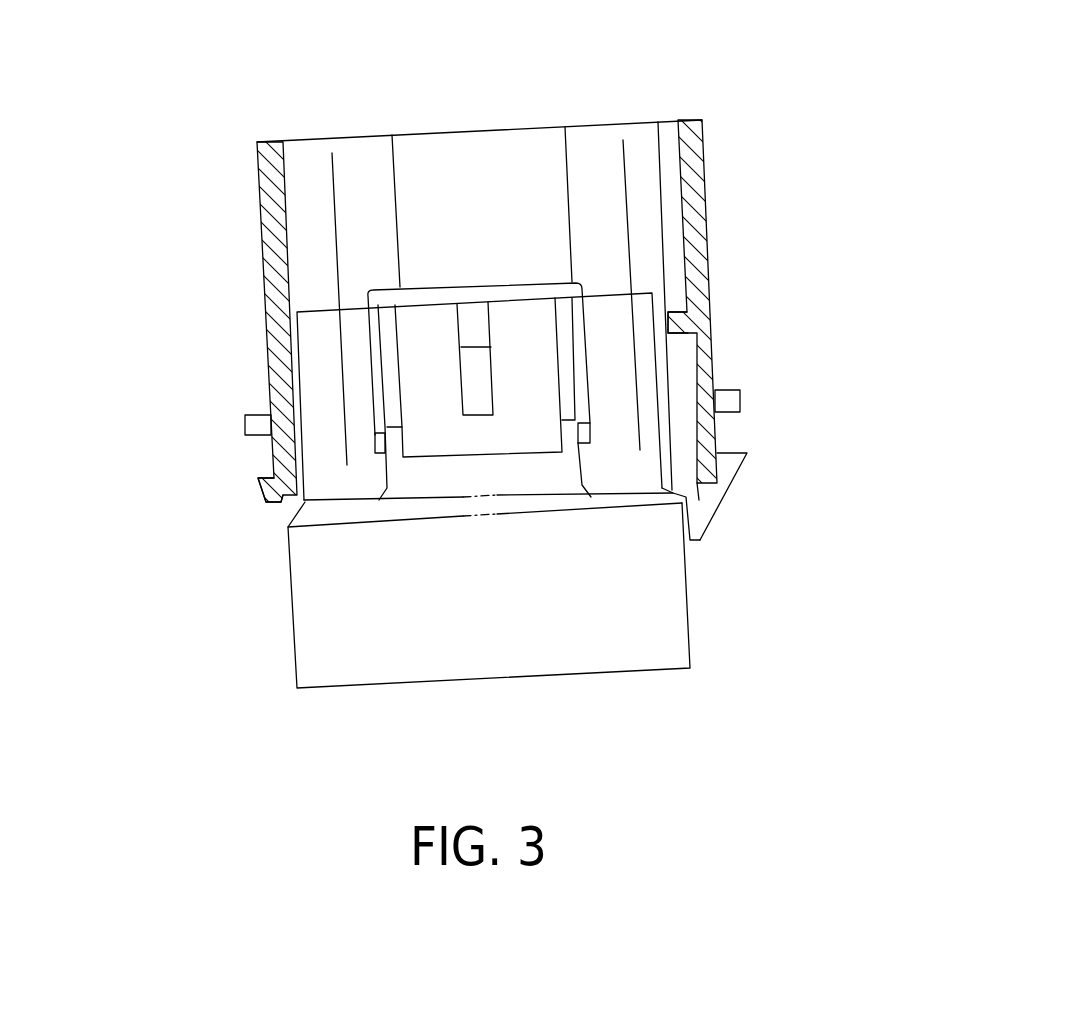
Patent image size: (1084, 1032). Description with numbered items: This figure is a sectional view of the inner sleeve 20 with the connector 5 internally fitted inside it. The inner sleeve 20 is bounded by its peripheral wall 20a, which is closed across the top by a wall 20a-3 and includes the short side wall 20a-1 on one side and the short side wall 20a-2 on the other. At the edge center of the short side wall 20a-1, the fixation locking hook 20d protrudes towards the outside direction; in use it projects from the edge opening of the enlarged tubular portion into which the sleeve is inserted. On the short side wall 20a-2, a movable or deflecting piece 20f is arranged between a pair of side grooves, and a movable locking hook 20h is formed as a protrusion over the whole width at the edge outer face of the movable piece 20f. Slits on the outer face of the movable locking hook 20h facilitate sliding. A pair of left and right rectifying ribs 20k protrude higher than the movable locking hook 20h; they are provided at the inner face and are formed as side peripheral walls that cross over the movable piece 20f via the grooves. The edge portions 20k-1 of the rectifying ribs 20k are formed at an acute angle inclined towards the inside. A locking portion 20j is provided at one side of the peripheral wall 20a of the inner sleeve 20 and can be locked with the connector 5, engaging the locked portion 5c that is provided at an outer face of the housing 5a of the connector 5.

The inner sleeve 20 is at (542, 375).
The peripheral wall 20a is at (702, 145).
The short side wall 20a-1 is at (258, 222).
The short side wall 20a-2 is at (707, 258).
The top wall 20a-3 is at (470, 173).
The fixation locking hook 20d is at (262, 485).
The movable piece 20f is at (702, 353).
The movable locking hook 20h is at (722, 470).
The locking portion 20j is at (427, 410).
The rectifying rib 20k is at (684, 522).
The edge portion 20k-1 is at (697, 527).
The connector 5 is at (408, 527).
The housing 5a is at (297, 355).
The locked portion 5c is at (480, 403).